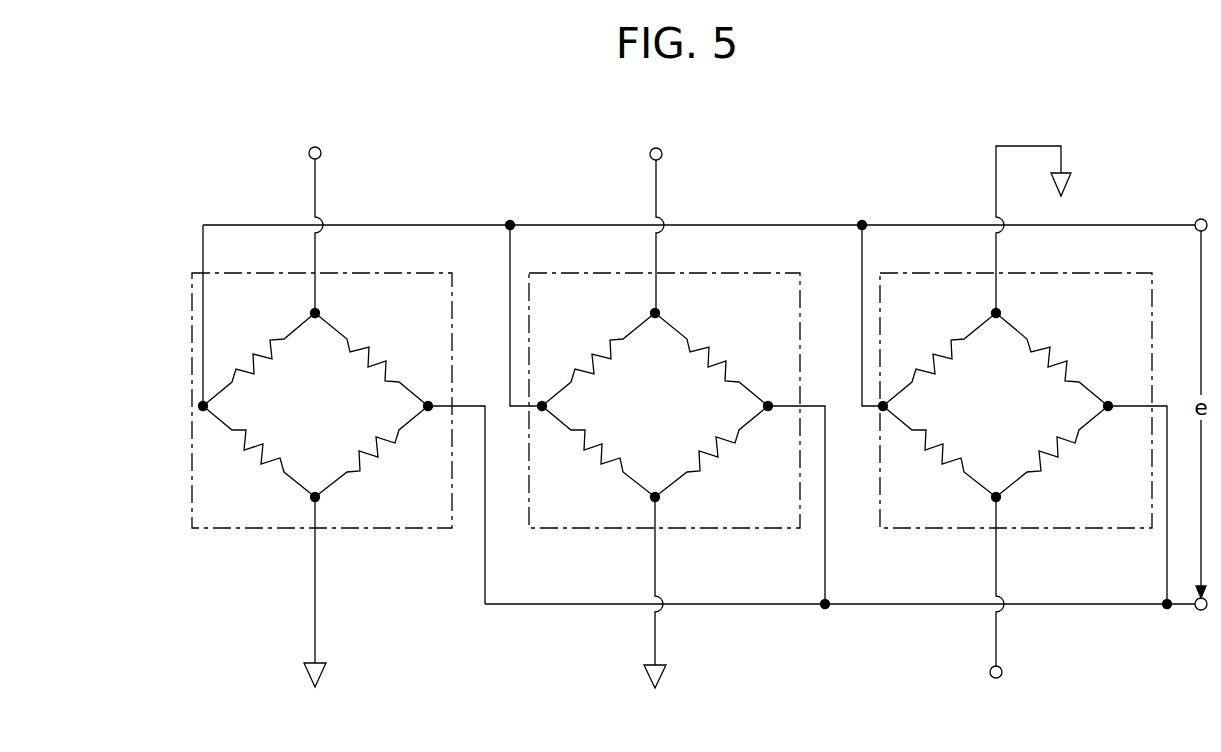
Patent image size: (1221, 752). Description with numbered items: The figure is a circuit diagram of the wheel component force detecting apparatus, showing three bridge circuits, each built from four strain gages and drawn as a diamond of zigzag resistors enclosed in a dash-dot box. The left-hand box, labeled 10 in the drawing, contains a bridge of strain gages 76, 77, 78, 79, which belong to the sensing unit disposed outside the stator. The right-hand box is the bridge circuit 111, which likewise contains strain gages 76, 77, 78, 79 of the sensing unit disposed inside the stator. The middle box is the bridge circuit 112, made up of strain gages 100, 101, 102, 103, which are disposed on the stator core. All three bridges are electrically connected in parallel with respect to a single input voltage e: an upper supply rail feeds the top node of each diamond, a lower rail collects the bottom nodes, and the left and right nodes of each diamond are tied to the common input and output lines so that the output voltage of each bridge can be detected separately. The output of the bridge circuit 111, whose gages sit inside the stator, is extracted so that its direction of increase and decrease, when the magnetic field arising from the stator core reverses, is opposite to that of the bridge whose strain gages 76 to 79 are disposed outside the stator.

The strain detecting element (sensor chip) 10 is at (199, 529).
The strain gage 76 is at (251, 357).
The strain gage 77 is at (378, 356).
The strain gage 78 is at (391, 447).
The strain gage 79 is at (243, 447).
The strain gage 100 is at (589, 357).
The strain gage 101 is at (723, 357).
The strain gage 102 is at (729, 450).
The strain gage 103 is at (581, 450).
The bridge circuit 111 is at (898, 531).
The bridge circuit 112 is at (553, 529).